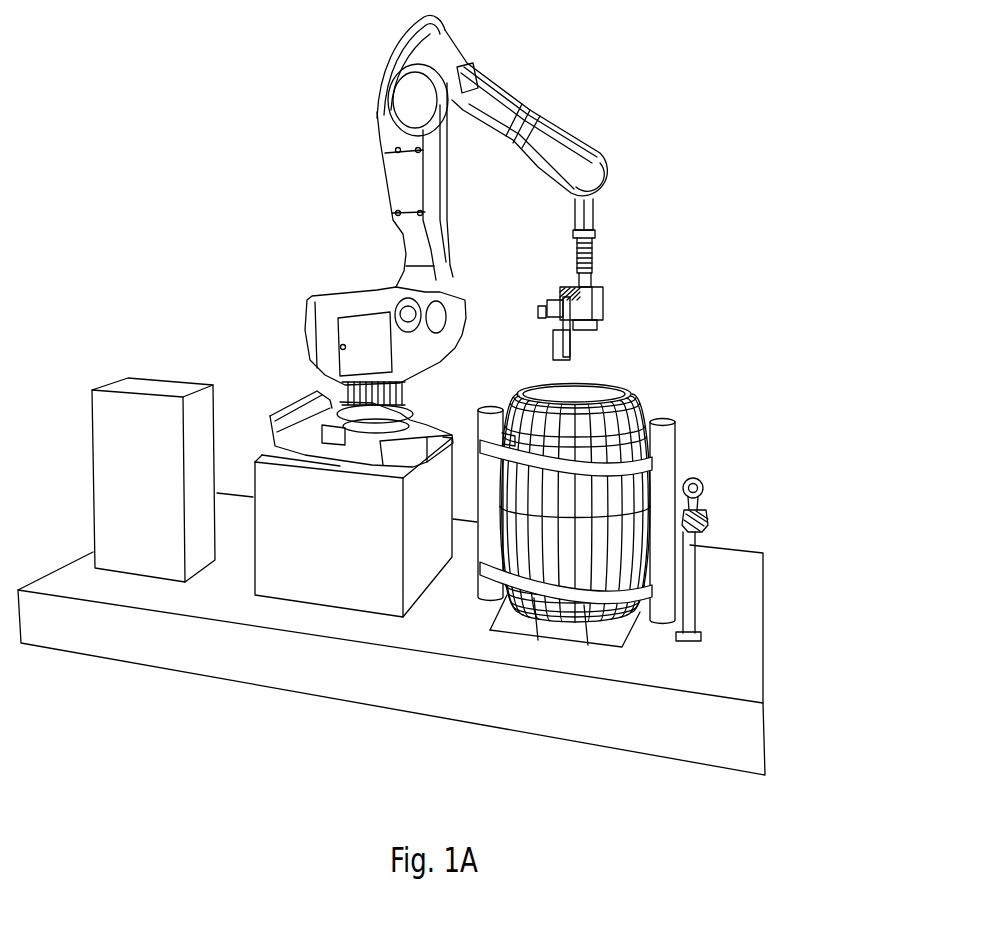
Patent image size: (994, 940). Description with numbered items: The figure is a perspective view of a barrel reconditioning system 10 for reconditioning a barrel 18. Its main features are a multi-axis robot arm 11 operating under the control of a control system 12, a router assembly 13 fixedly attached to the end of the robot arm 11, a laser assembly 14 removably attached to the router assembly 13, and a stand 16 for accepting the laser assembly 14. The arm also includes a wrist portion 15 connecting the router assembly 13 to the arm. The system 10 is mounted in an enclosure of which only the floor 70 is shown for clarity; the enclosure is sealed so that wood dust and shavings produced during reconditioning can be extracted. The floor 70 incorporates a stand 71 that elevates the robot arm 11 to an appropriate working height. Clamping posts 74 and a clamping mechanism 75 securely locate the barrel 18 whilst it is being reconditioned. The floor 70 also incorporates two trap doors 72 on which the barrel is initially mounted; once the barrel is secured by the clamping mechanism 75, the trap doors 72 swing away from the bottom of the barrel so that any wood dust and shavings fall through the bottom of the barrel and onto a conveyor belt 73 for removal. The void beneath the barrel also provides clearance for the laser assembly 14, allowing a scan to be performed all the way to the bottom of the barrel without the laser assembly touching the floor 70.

The barrel reconditioning system 10 is at (755, 175).
The multi-axis robot arm 11 is at (412, 103).
The control system 12 is at (152, 385).
The router assembly 13 is at (593, 303).
The laser assembly 14 is at (560, 347).
The wrist 15 is at (597, 227).
The stand 16 is at (690, 588).
The barrel 18 is at (613, 398).
The floor 70 is at (737, 678).
The stand 71 is at (338, 548).
The trap doors 72 is at (508, 622).
The conveyor belt 73 is at (556, 626).
The clamping posts 74 is at (662, 440).
The clamping mechanism 75 is at (663, 470).